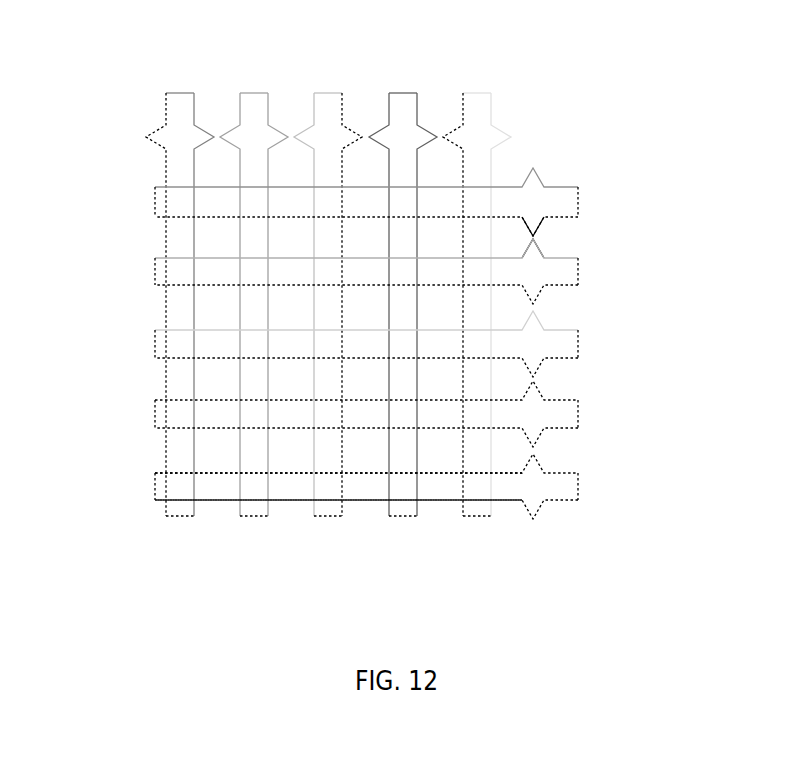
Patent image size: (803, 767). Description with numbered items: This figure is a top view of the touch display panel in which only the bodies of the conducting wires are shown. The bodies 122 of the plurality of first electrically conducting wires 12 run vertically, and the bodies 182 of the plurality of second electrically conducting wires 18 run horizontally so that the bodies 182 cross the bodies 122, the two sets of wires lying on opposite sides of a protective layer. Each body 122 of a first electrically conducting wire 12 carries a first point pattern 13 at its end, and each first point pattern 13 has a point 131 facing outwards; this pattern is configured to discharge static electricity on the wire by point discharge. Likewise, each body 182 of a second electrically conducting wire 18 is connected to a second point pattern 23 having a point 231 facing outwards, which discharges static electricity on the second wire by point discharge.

The first electrically conducting wire 12 is at (250, 122).
The body 122 is at (185, 128).
The first point pattern 13 is at (453, 140).
The point 131 is at (368, 135).
The second point pattern 23 is at (528, 183).
The point 231 is at (533, 237).
The second electrically conducting wire 18 is at (559, 489).
The body 182 is at (362, 492).